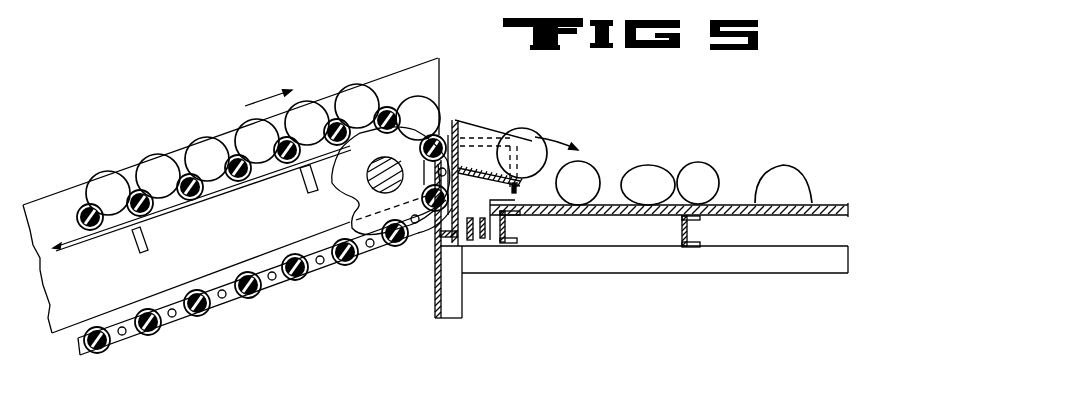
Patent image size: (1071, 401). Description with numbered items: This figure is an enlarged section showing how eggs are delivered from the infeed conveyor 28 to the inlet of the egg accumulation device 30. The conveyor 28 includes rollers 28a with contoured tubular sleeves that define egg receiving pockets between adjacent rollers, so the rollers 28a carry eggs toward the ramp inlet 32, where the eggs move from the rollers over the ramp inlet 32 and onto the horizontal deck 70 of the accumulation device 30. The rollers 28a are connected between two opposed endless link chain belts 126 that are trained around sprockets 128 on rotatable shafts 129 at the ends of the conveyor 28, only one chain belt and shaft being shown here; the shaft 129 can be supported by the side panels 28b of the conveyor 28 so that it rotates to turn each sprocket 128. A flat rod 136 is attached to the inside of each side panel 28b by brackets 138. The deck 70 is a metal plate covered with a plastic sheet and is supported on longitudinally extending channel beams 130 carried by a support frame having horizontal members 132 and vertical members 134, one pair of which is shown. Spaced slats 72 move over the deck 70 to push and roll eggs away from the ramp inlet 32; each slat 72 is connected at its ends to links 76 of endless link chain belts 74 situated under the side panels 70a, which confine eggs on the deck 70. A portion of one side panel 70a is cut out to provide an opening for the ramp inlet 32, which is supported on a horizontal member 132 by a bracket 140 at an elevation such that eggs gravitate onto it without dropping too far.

The conveyor 28 is at (118, 166).
The rollers 28a is at (150, 316).
The side panels 28b is at (52, 330).
The endless link chain belts 126 is at (123, 335).
The bracket 140 is at (438, 226).
The flat rod 136 is at (60, 250).
The brackets 138 is at (135, 247).
The sprockets 128 is at (357, 220).
The rotatable shafts 129 is at (400, 153).
The ramp inlet 32 is at (468, 166).
The side panels 70a is at (527, 128).
The slats 72 is at (601, 197).
The horizontal deck 70 is at (727, 206).
The accumulation device 30 is at (823, 195).
The links 76 is at (503, 223).
The channel beams 130 is at (508, 240).
The horizontal members 132 is at (772, 268).
The endless link chain belts 74 is at (478, 242).
The vertical members 134 is at (462, 311).